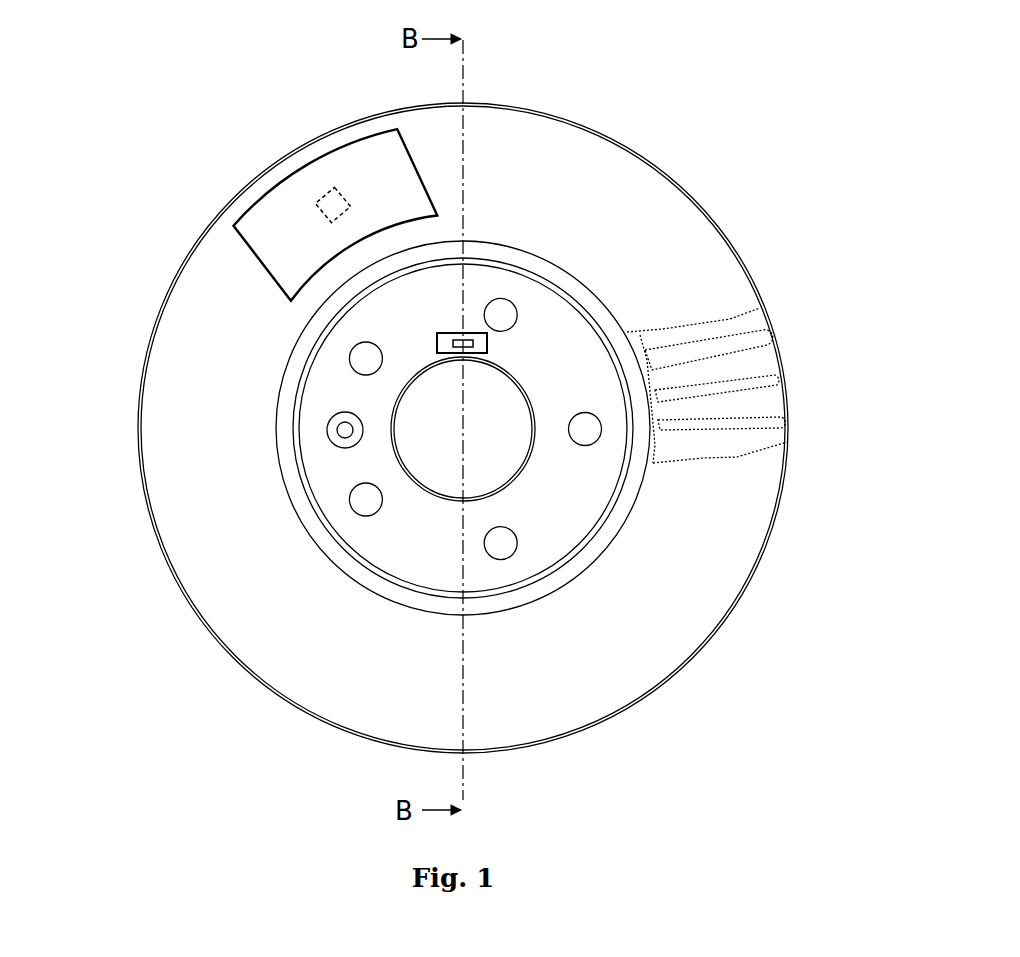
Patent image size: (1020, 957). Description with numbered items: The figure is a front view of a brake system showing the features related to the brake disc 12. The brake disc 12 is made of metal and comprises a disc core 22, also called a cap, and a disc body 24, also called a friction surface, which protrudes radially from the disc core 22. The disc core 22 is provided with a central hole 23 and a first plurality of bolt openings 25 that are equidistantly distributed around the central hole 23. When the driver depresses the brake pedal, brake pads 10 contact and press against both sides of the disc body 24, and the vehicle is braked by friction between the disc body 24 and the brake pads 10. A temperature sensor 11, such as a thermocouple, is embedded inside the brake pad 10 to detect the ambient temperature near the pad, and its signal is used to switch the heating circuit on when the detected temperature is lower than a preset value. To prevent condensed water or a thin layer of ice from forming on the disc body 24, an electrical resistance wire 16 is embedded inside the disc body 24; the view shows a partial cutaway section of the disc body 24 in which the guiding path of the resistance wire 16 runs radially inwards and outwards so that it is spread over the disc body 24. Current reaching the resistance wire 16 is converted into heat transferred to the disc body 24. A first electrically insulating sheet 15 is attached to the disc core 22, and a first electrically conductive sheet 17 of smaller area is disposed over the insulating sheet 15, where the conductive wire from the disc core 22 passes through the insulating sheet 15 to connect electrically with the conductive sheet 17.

The brake pad 10 is at (373, 165).
The temperature sensor 11 is at (333, 204).
The brake disc 12 is at (680, 141).
The first electrically insulating sheet 15 is at (479, 340).
The electrical resistance wire 16 is at (747, 333).
The first electrically conductive sheet 17 is at (455, 343).
The disc core 22 is at (405, 547).
The central hole 23 is at (493, 450).
The disc body 24 is at (218, 517).
The bolt openings 25 is at (365, 357).